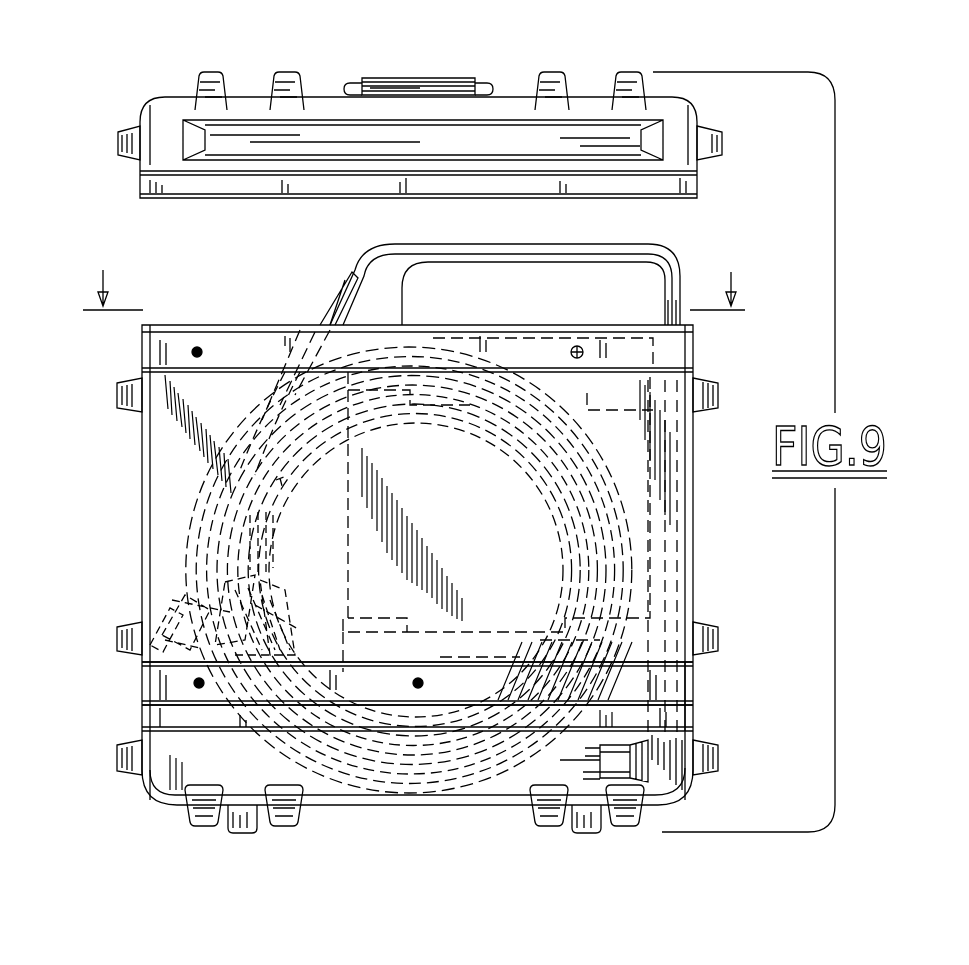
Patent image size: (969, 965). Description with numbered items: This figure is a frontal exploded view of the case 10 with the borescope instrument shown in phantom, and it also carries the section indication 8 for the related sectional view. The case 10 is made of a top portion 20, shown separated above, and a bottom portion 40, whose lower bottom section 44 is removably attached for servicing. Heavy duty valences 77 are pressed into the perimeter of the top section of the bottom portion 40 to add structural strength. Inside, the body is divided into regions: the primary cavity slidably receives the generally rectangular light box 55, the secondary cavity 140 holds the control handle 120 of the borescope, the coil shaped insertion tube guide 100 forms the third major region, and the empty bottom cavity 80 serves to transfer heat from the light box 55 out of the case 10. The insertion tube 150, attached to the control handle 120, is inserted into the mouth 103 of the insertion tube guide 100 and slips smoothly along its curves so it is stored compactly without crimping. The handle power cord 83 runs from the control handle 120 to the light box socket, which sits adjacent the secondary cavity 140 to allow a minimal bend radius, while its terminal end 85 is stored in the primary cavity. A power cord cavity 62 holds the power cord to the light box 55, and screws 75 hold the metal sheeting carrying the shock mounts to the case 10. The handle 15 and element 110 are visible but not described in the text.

The case 10 is at (138, 460).
The carrying handle 15 is at (372, 78).
The top portion 20 is at (150, 108).
The bottom portion 40 is at (492, 805).
The bottom section 44 is at (665, 770).
The light box 55 is at (620, 470).
The power cord cavity 62 is at (655, 540).
The screws 75 is at (577, 348).
The valences 77 is at (128, 357).
The bottom cavity 80 is at (168, 774).
The handle power cord 83 is at (368, 262).
The terminal end 85 is at (693, 666).
The insertion tube guide 100 is at (150, 676).
The mouth 103 is at (172, 626).
The connector 110 is at (268, 526).
The control handle 120 is at (272, 378).
The secondary cavity 140 is at (178, 505).
The insertion tube 150 is at (282, 655).
The section line 8- 8 is at (414, 306).